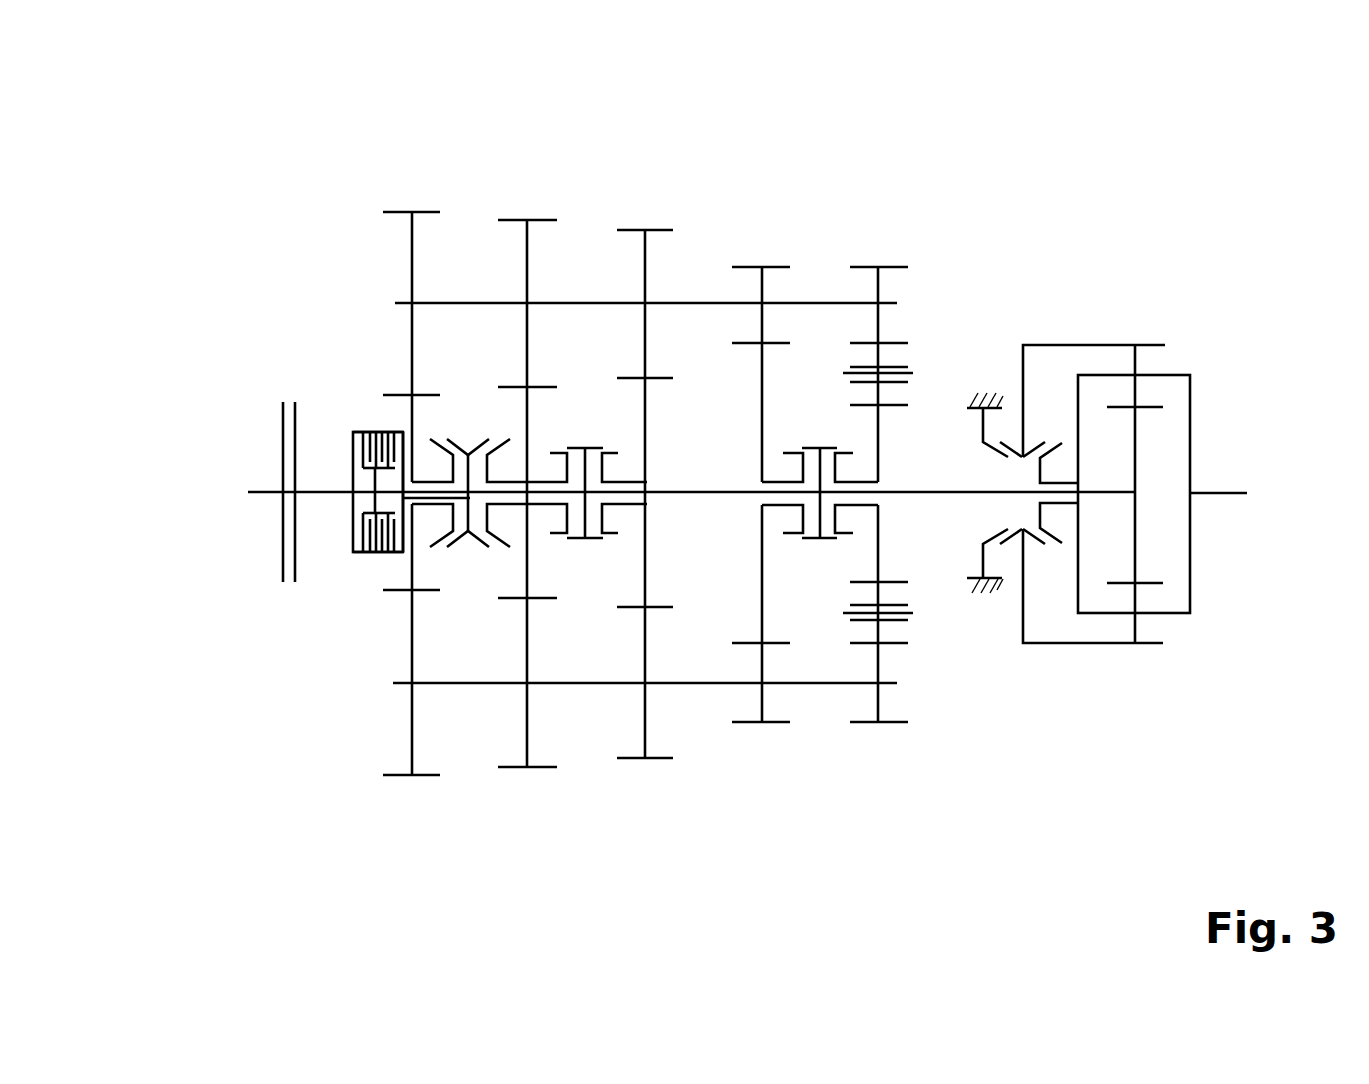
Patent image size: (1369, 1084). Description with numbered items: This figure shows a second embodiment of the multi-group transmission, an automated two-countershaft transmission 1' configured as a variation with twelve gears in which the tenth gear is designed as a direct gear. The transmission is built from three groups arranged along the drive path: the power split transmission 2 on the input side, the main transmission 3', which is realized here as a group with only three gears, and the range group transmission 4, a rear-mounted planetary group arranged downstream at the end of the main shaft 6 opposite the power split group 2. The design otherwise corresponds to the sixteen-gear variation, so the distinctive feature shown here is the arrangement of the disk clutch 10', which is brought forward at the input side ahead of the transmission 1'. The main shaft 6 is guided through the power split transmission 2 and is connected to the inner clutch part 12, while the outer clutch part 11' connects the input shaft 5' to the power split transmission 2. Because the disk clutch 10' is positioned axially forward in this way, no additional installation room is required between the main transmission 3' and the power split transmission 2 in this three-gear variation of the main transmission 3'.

The two-countershaft transmission 1' is at (548, 371).
The disk clutch 10' is at (216, 373).
The input shaft 5' is at (203, 522).
The inner clutch part 12 is at (366, 514).
The outer clutch part 11' is at (216, 594).
The main shaft 6 is at (1100, 493).
The power split transmission 2 is at (467, 715).
The main transmission 3' is at (807, 563).
The range group transmission 4 is at (1082, 682).